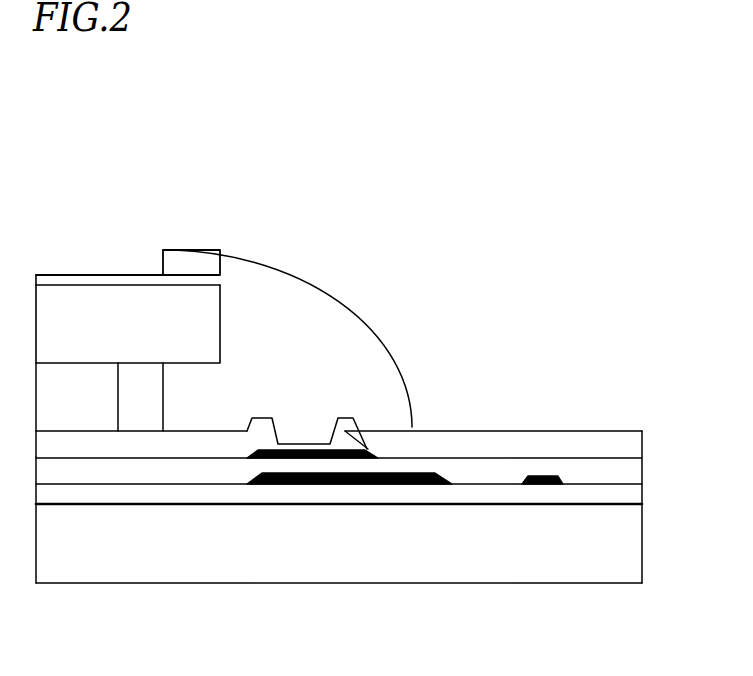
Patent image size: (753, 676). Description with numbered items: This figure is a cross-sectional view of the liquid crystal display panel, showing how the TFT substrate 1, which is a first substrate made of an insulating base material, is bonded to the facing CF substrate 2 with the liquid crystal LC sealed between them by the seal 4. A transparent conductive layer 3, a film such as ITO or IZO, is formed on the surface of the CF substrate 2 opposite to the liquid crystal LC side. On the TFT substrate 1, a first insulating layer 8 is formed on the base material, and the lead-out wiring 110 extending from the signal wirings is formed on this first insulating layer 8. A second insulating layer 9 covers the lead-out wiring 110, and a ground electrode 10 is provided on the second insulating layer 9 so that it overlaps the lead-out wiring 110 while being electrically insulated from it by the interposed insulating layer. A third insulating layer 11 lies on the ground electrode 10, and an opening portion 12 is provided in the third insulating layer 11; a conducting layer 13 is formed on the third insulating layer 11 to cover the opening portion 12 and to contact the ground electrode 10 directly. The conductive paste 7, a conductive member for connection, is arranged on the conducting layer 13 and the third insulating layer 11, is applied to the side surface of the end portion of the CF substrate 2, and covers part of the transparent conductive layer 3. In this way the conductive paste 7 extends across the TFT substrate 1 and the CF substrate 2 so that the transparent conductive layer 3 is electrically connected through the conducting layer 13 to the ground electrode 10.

The TFT substrate 1 is at (398, 520).
The CF substrate 2 is at (152, 337).
The transparent conductive layer 3 is at (127, 280).
The seal 4 is at (150, 413).
The conductive paste 7 is at (258, 283).
The first insulating layer 8 is at (632, 500).
The second insulating layer 9 is at (560, 463).
The ground electrode 10 is at (378, 440).
The third insulating layer 11 is at (508, 447).
The opening portion 12 is at (273, 437).
The conducting layer 13 is at (367, 440).
The lead-out wiring 110 is at (262, 487).
The liquid crystal LC is at (50, 400).